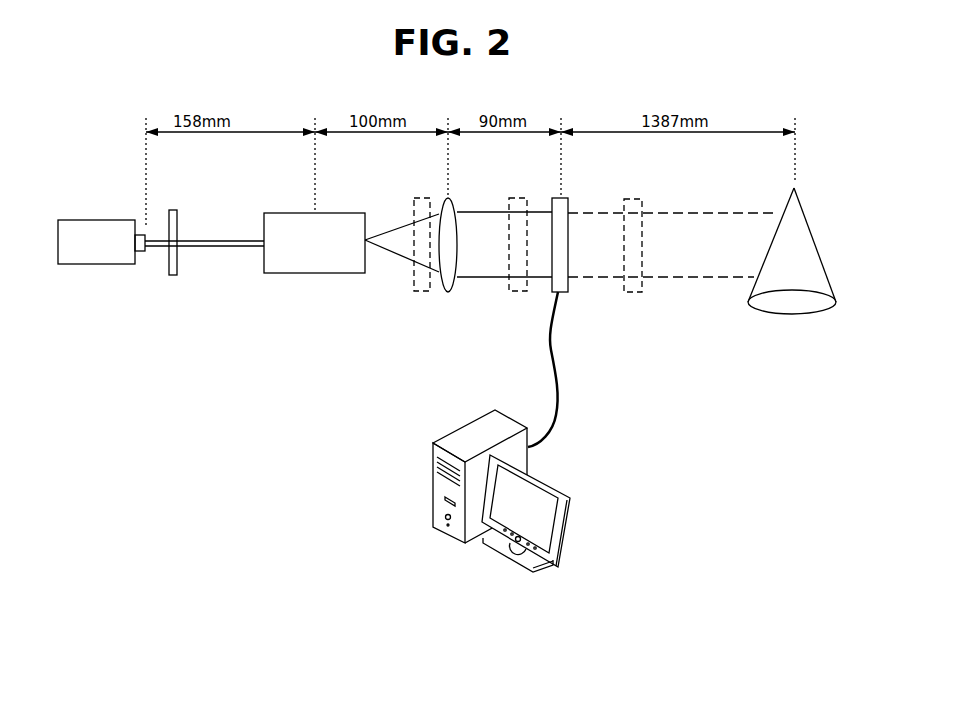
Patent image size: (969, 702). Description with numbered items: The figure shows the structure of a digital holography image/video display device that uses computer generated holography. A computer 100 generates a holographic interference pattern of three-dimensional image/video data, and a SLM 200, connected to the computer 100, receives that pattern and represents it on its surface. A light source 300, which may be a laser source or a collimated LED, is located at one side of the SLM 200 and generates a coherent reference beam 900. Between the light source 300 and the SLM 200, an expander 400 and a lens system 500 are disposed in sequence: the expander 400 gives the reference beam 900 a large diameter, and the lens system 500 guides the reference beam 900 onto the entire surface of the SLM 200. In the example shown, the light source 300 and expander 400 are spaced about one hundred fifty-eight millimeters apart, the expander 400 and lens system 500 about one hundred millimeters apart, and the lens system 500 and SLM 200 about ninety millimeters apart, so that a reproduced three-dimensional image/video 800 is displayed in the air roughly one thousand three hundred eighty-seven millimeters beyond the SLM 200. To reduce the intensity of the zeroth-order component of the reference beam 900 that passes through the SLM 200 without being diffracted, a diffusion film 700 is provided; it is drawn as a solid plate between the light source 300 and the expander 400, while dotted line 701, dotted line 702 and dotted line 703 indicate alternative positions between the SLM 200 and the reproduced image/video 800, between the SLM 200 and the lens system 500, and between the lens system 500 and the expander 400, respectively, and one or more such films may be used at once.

The computer 100 is at (433, 485).
The SLM 200 is at (569, 263).
The light source 300 is at (95, 265).
The expander 400 is at (315, 273).
The lens system 500 is at (447, 292).
The diffusion film 700 is at (173, 275).
The dotted line 701 is at (635, 292).
The dotted line 702 is at (522, 291).
The dotted line 703 is at (425, 291).
The reproduced 3D image/video 800 is at (792, 314).
The reference beam 900 is at (213, 239).